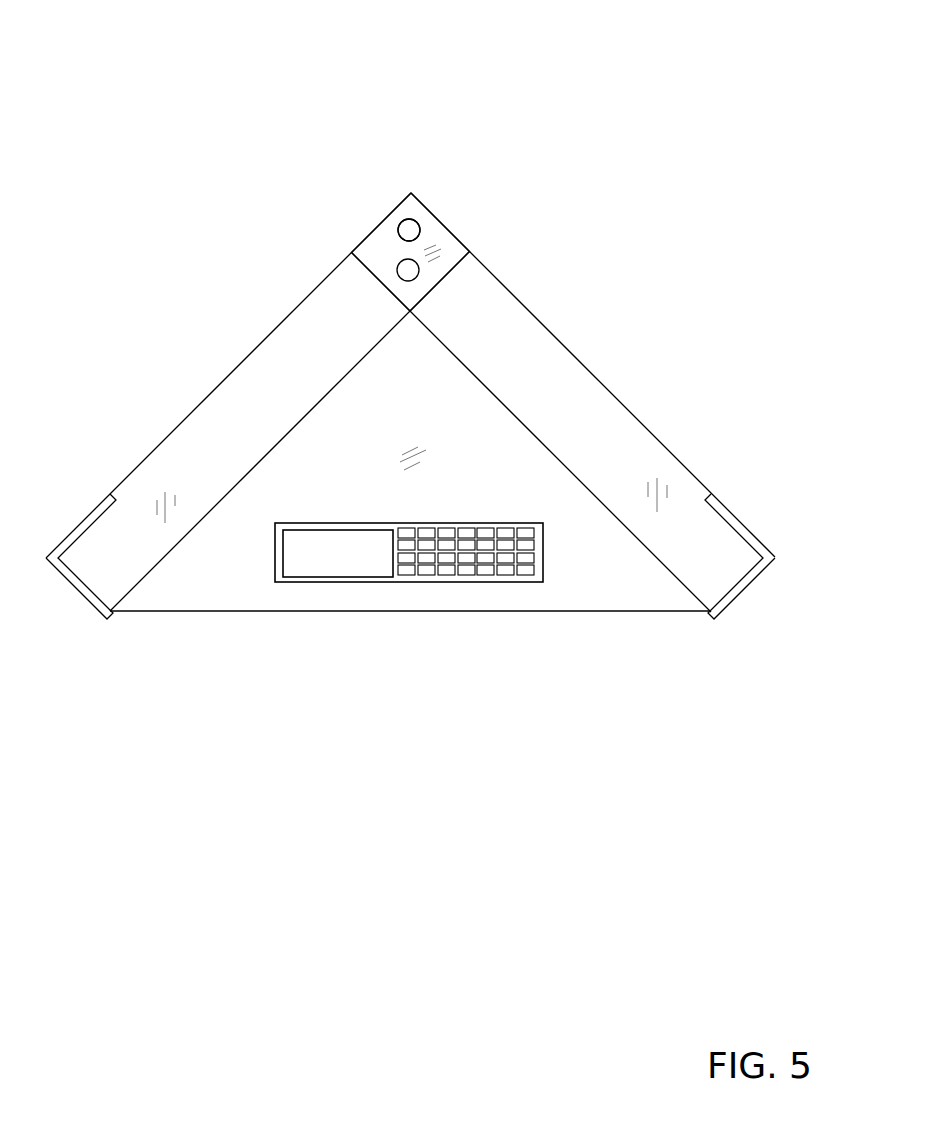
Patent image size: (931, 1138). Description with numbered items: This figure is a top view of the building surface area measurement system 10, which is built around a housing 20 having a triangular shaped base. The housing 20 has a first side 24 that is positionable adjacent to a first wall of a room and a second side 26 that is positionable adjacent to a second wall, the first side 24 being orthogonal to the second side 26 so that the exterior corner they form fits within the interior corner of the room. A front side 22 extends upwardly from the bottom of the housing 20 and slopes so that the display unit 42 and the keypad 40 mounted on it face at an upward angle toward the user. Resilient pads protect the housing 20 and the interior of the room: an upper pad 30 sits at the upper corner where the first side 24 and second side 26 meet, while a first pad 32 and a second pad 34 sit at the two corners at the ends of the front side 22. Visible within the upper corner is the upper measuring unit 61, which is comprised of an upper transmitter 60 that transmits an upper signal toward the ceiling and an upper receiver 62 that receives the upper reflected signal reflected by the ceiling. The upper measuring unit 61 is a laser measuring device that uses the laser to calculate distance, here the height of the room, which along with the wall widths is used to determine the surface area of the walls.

The building surface area measurement system 10 is at (178, 106).
The housing 20 is at (156, 434).
The front side 22 is at (215, 573).
The first side 24 is at (582, 370).
The second side 26 is at (250, 355).
The upper pad 30 is at (453, 250).
The first pad 32 is at (738, 520).
The second pad 34 is at (73, 590).
The keypad 40 is at (467, 573).
The display unit 42 is at (335, 568).
The upper transmitter 60 is at (408, 270).
The upper measuring unit 61 is at (394, 213).
The upper receiver 62 is at (409, 230).